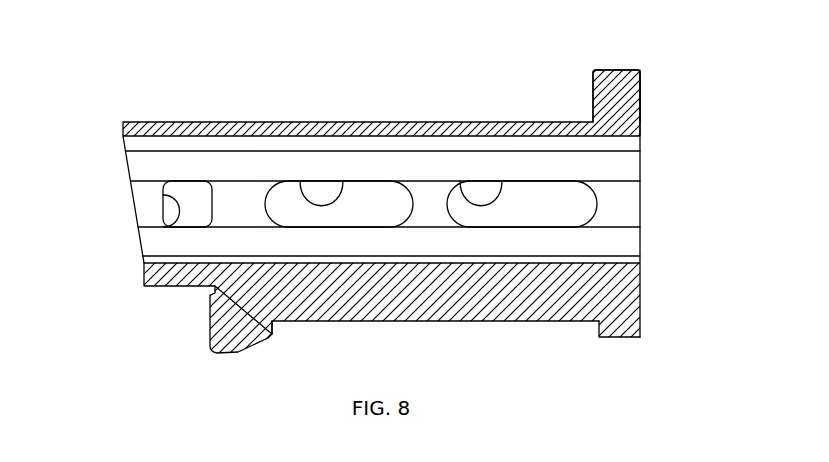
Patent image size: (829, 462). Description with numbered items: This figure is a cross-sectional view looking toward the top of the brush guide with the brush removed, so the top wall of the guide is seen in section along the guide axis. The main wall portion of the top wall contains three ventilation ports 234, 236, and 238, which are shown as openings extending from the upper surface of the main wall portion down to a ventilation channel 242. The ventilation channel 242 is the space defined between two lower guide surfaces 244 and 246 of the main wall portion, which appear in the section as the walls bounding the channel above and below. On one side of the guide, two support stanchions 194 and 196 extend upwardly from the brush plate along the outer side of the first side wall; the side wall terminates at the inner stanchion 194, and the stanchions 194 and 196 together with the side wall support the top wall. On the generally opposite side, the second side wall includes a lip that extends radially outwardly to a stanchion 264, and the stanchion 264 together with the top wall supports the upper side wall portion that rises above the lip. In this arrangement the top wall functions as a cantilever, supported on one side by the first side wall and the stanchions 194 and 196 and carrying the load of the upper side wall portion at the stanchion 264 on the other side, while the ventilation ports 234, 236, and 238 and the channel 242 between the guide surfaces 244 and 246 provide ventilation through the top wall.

The support stanchion 194 is at (210, 321).
The support stanchion 196 is at (642, 327).
The ventilation port 234 is at (163, 228).
The ventilation port 236 is at (300, 192).
The ventilation port 238 is at (460, 190).
The ventilation channel 242 is at (137, 210).
The lower guide surface 244 is at (642, 238).
The lower guide surface 246 is at (640, 153).
The stanchion 264 is at (627, 70).